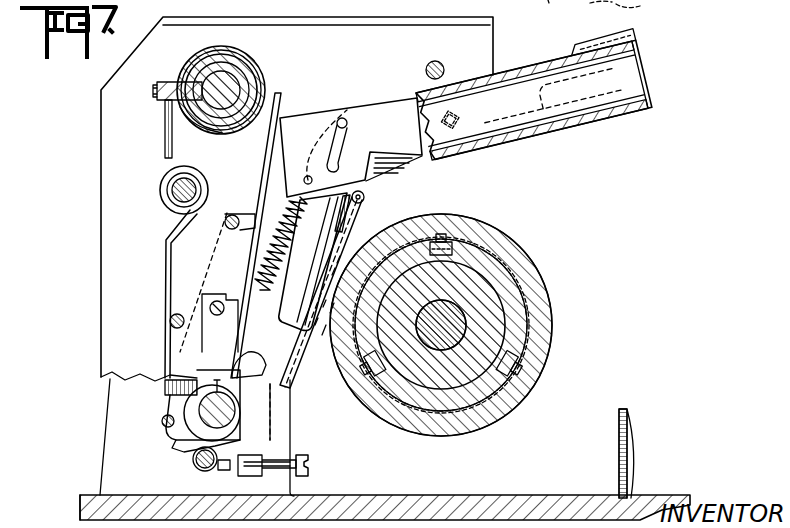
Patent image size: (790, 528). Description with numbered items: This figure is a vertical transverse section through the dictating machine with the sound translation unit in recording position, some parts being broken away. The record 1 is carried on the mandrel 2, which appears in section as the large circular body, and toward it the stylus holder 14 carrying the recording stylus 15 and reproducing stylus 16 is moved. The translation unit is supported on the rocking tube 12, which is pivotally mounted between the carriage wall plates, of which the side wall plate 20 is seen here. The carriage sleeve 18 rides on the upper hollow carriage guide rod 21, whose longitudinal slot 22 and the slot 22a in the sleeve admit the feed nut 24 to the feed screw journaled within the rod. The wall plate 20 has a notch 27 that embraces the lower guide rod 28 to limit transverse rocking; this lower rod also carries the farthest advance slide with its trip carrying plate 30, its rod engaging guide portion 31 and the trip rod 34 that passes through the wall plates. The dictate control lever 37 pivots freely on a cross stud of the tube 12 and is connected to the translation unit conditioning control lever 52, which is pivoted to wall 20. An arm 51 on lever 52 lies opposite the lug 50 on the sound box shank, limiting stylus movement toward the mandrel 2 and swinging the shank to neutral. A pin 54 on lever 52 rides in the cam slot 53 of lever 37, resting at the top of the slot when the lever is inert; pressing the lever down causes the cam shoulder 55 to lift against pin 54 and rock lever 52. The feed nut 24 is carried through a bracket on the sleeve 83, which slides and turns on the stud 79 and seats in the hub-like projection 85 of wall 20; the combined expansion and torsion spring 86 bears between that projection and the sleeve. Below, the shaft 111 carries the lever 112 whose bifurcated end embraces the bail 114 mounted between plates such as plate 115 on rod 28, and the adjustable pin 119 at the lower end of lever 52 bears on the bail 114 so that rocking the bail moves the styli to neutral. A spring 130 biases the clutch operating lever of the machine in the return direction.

The sound track receiving record 1 is at (545, 338).
The mandrel 2 is at (540, 304).
The rocking tube 12 is at (607, 124).
The stylus holder 14 is at (313, 372).
The recording stylus 15 is at (330, 310).
The reproducing stylus 16 is at (330, 330).
The sleeve 18 is at (172, 130).
The side wall plate 20 is at (101, 246).
The upper hollow carriage guide rod 21 is at (250, 68).
The longitudinal slot 22 is at (210, 128).
The slot in sleeve 22a is at (186, 70).
The feed nut 24 is at (165, 100).
The notch 27 is at (197, 376).
The lower guide rod 28 is at (207, 430).
The trip carrying plate 30 is at (166, 394).
The rod engaging guide portion 31 is at (172, 402).
The trip rod 34 is at (163, 432).
The dictate control lever 37 is at (600, 48).
The lug 50 is at (354, 218).
The arm 51 is at (366, 192).
The translation unit conditioning control lever 52 is at (281, 221).
The cam slot 53 is at (330, 122).
The pin 54 is at (343, 118).
The cam shoulder 55 is at (340, 139).
The stud 79 is at (167, 199).
The sleeve 83 is at (184, 189).
The hub-like projection 85 is at (162, 174).
The combined expansion and torsion spring 86 is at (174, 219).
The shaft 111 is at (561, 13).
The lever 112 is at (601, 13).
The bail 114 is at (196, 463).
The plate 115 is at (226, 470).
The adjustable pin 119 is at (280, 460).
The spring 130 is at (645, 13).